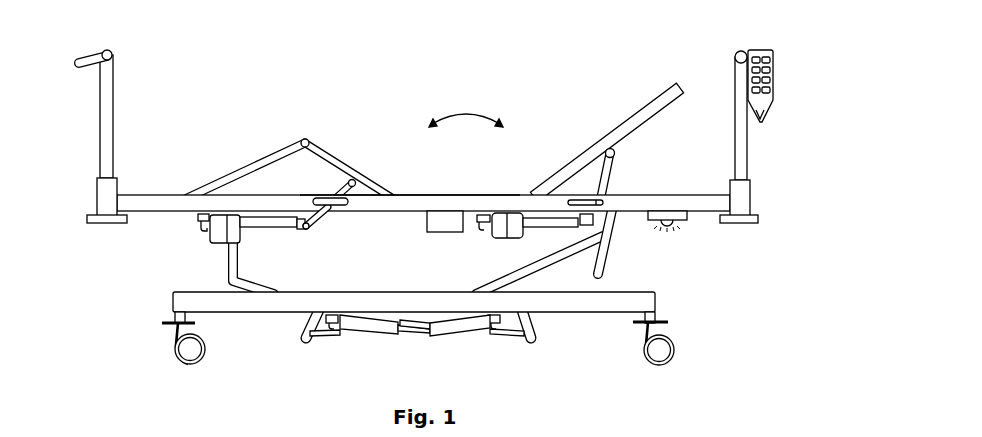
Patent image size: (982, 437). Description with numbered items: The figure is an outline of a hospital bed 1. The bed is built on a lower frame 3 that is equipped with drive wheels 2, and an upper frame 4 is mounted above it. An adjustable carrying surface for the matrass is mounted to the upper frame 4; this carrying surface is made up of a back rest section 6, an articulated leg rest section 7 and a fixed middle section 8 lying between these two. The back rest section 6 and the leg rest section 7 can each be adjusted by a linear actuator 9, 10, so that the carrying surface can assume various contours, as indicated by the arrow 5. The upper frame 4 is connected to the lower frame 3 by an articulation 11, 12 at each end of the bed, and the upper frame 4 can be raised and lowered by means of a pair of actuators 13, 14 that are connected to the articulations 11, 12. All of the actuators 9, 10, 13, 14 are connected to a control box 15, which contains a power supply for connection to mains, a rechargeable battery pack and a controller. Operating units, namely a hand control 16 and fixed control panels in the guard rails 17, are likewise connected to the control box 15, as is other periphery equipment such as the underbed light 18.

The hospital bed 1 is at (290, 45).
The drive wheels 2 is at (177, 363).
The lower frame 3 is at (595, 305).
The upper frame 4 is at (642, 200).
The arrow 5 is at (466, 113).
The back rest section 6 is at (600, 138).
The articulated leg rest section 7 is at (310, 138).
The fixed middle section 8 is at (445, 202).
The linear actuator 9 is at (493, 240).
The linear actuator 10 is at (270, 228).
The articulation 11 is at (613, 273).
The articulation 12 is at (227, 263).
The actuator 13 is at (433, 337).
The actuator 14 is at (357, 318).
The control box 15 is at (453, 227).
The hand control 16 is at (762, 45).
The guard rail 17 is at (91, 53).
The underbed light 18 is at (685, 220).